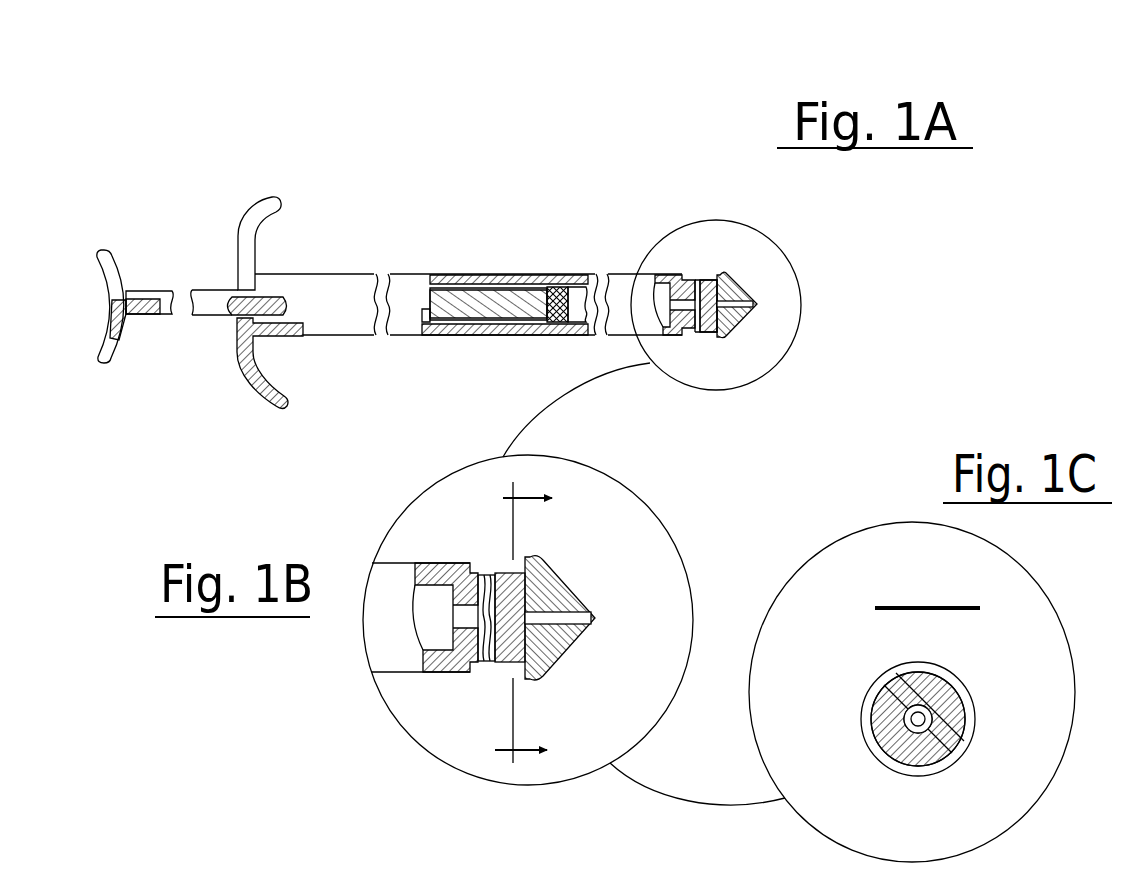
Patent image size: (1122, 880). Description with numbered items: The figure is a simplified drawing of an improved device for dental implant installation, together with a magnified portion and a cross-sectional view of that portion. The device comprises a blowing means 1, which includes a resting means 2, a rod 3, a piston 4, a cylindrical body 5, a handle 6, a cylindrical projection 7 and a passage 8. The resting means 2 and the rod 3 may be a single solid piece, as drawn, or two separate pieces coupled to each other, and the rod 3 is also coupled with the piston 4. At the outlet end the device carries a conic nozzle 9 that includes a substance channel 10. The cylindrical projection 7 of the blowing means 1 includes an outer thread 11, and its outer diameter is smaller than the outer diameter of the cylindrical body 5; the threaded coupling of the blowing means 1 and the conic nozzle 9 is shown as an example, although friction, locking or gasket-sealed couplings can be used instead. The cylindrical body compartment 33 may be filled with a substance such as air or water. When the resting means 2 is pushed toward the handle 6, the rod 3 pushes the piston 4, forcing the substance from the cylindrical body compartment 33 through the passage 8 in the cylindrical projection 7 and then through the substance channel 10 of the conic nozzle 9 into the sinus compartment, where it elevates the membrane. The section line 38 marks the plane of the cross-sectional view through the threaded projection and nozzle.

In FIG. 1A, the blowing means 1 is at (449, 130).
In FIG. 1A, the resting means 2 is at (116, 268).
In FIG. 1A, the rod 3 is at (215, 304).
In FIG. 1A, the piston 4 is at (561, 288).
In FIG. 1A, the cylindrical body 5 is at (413, 272).
In FIG. 1A, the handle 6 is at (270, 214).
In FIG. 1B, the cylindrical projection 7 is at (500, 590).
In FIG. 1C, the cylindrical projection 7 is at (915, 734).
In FIG. 1B, the passage 8 is at (472, 623).
In FIG. 1C, the passage 8 is at (897, 743).
In FIG. 1A, the conic nozzle 9 is at (738, 269).
In FIG. 1B, the conic nozzle 9 is at (572, 558).
In FIG. 1C, the conic nozzle 9 is at (866, 666).
In FIG. 1B, the substance channel 10 is at (590, 620).
In FIG. 1C, the substance channel 10 is at (920, 725).
In FIG. 1B, the thread 11 is at (510, 654).
In FIG. 1C, the thread 11 is at (947, 700).
In FIG. 1A, the cylindrical body compartment 33 is at (577, 312).
In FIG. 1B, the section line 38- 38 is at (547, 621).
In FIG. 1C, the section line 38- 38 is at (927, 590).